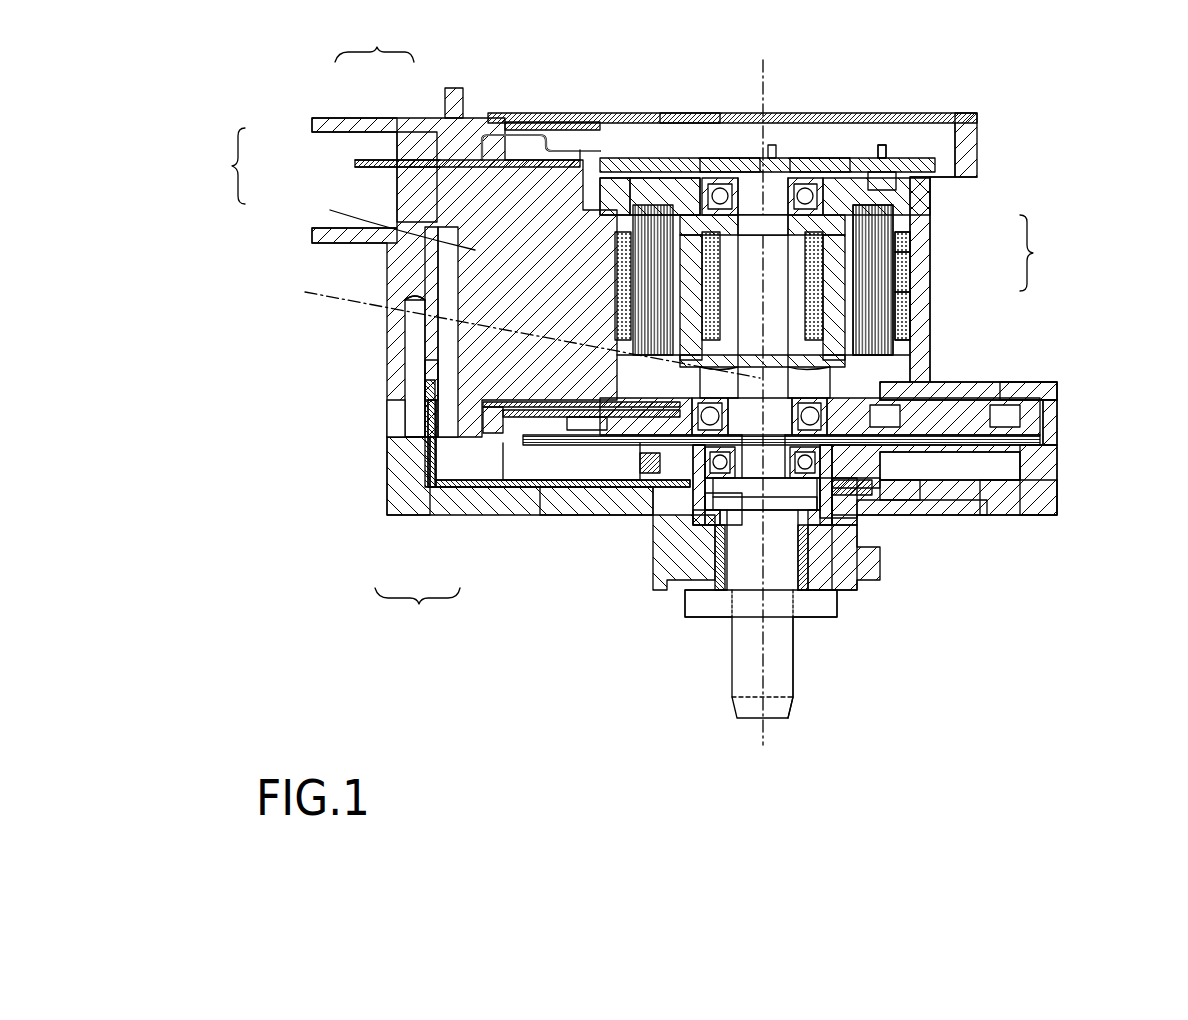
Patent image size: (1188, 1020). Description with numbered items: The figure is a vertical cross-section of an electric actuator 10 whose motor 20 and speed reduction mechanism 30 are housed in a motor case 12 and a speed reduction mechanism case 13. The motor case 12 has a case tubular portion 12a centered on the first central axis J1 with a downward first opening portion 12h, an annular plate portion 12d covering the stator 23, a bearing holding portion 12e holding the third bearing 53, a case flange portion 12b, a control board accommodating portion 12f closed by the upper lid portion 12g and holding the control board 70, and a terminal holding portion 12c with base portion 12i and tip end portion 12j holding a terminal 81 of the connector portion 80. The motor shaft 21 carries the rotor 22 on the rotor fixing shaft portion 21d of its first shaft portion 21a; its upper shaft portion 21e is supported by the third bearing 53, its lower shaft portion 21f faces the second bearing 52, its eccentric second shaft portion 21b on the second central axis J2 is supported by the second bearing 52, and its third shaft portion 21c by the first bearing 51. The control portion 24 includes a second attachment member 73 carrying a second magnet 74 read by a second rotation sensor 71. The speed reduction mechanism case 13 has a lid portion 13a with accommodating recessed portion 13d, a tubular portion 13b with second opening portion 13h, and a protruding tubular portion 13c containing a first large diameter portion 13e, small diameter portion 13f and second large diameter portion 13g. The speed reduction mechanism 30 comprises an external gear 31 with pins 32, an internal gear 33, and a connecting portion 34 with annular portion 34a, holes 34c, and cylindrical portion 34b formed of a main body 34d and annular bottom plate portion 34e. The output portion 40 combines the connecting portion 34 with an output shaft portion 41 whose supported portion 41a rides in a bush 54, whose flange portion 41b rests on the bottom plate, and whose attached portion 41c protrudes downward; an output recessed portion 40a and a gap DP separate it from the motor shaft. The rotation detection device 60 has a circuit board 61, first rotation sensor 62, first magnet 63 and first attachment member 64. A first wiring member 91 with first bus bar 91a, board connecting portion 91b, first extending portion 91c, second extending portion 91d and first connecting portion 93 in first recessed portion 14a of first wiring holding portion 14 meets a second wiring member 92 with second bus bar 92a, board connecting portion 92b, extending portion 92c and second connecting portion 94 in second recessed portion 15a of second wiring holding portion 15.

The electric actuator 10 is at (1075, 165).
The motor case 12 is at (1050, 393).
The case tubular portion 12a is at (922, 335).
The case flange portion 12b is at (1040, 380).
The terminal holding portion 12c is at (374, 47).
The annular plate portion 12d is at (738, 160).
The bearing holding portion 12e is at (818, 160).
The control board accommodating portion 12f is at (965, 152).
The upper lid portion 12g is at (695, 124).
The first opening portion 12h is at (405, 418).
The base portion 12i is at (415, 160).
The tip end portion 12j is at (336, 127).
The speed reduction mechanism case 13 is at (1062, 435).
The lid portion 13a is at (1000, 520).
The tubular portion 13b is at (1048, 415).
The protruding tubular portion 13c is at (716, 570).
The accommodating recessed portion 13d is at (562, 495).
The first large diameter portion 13e is at (850, 525).
The small diameter portion 13f is at (690, 580).
The second large diameter portion 13g is at (860, 605).
The second opening portion 13h is at (418, 305).
The first wiring holding portion 14 is at (430, 270).
The first recessed portion 14a is at (432, 378).
The second wiring holding portion 15 is at (420, 505).
The second recessed portion 15a is at (510, 410).
The motor 20 is at (938, 200).
The motor shaft 21 is at (840, 230).
The first shaft portion 21a is at (1047, 253).
The second shaft portion 21b is at (850, 382).
The third shaft portion 21c is at (840, 580).
The rotor fixing shaft portion 21d is at (900, 278).
The upper shaft portion 21e is at (905, 242).
The lower shaft portion 21f is at (898, 312).
The rotor 22 is at (913, 215).
The stator 23 is at (918, 235).
The control portion 24 is at (960, 117).
The speed reduction mechanism 30 is at (965, 470).
The external gear 31 is at (965, 398).
The pin 32 is at (960, 505).
The internal gear 33 is at (1022, 440).
The connecting portion 34 is at (646, 563).
The annular portion 34a is at (695, 505).
The cylindrical portion 34b is at (692, 490).
The hole 34c is at (1012, 458).
The cylindrical portion main body 34d is at (842, 512).
The annular bottom plate portion 34e is at (700, 528).
The output portion 40 is at (795, 676).
The output recessed portion 40a is at (642, 465).
The output shaft portion 41 is at (780, 718).
The supported portion 41a is at (748, 585).
The flange portion 41b is at (793, 620).
The attached portion 41c is at (792, 700).
The first bearing 51 is at (705, 540).
The second bearing 52 is at (560, 402).
The third bearing 53 is at (716, 188).
The bush 54 is at (750, 585).
The rotation detection device 60 is at (830, 468).
The circuit board 61 is at (862, 492).
The first rotation sensor 62 is at (852, 482).
The first magnet 63 is at (905, 480).
The first attachment member 64 is at (975, 408).
The control board 70 is at (780, 160).
The second rotation sensor 71 is at (880, 180).
The second attachment member 73 is at (610, 188).
The second magnet 74 is at (655, 186).
The connector portion 80 is at (455, 85).
The terminal 81 is at (520, 137).
The first wiring member 91 is at (418, 288).
The first bus bar 91a is at (224, 166).
The board connecting portion 91b is at (440, 158).
The first extending portion 91c is at (460, 180).
The second extending portion 91d is at (330, 200).
The second wiring member 92 is at (492, 488).
The second bus bar 92a is at (417, 611).
The board connecting portion 92b is at (482, 488).
The extending portion 92c is at (432, 490).
The first connecting portion 93 is at (640, 415).
The second connecting portion 94 is at (425, 422).
The first central axis J1 is at (768, 90).
The second central axis J2 is at (518, 329).
The gap DP is at (746, 717).